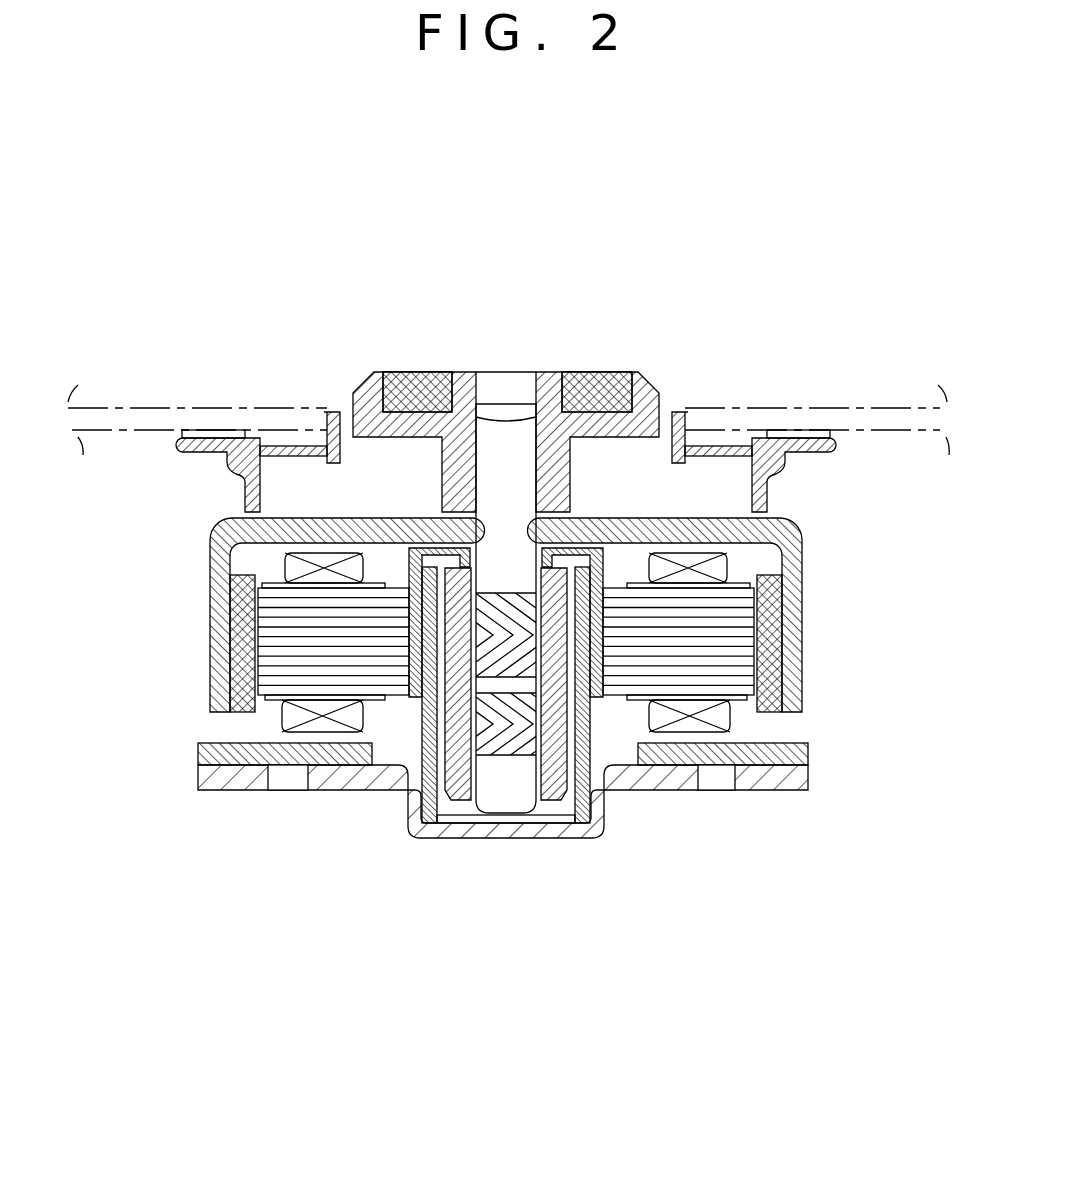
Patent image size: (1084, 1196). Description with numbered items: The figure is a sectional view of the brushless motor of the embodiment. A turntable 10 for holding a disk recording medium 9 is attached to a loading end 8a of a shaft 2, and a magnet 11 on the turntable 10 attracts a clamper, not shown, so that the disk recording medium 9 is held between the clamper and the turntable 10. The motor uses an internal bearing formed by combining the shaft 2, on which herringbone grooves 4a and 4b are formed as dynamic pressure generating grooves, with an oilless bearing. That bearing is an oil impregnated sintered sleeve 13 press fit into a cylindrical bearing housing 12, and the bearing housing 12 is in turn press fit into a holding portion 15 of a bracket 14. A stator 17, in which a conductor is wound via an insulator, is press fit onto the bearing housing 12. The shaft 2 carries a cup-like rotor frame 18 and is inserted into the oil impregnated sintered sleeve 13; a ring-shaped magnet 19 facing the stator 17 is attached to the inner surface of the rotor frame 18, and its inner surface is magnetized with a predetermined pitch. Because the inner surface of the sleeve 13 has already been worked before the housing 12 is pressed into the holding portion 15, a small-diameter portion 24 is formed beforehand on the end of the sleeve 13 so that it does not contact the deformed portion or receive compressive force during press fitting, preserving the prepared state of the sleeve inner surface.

The shaft 2 is at (517, 400).
The herringbone groove 4a is at (478, 672).
The herringbone groove 4b is at (473, 727).
The loading end 8a is at (512, 457).
The disk recording medium 9 is at (790, 408).
The turntable 10 is at (233, 463).
The magnet 11 is at (428, 385).
The bearing housing 12 is at (423, 603).
The oil impregnated sintered sleeve 13 is at (455, 656).
The bracket 14 is at (215, 794).
The holding portion 15 is at (428, 836).
The stator 17 is at (718, 638).
The rotor frame 18 is at (795, 549).
The ring-shaped magnet 19 is at (765, 668).
The small-diameter portion 24 is at (565, 820).